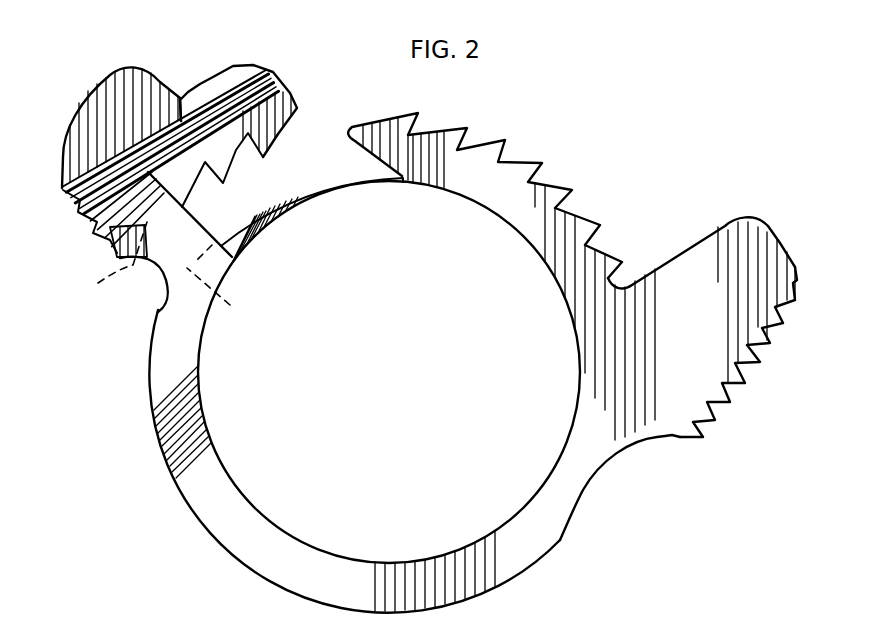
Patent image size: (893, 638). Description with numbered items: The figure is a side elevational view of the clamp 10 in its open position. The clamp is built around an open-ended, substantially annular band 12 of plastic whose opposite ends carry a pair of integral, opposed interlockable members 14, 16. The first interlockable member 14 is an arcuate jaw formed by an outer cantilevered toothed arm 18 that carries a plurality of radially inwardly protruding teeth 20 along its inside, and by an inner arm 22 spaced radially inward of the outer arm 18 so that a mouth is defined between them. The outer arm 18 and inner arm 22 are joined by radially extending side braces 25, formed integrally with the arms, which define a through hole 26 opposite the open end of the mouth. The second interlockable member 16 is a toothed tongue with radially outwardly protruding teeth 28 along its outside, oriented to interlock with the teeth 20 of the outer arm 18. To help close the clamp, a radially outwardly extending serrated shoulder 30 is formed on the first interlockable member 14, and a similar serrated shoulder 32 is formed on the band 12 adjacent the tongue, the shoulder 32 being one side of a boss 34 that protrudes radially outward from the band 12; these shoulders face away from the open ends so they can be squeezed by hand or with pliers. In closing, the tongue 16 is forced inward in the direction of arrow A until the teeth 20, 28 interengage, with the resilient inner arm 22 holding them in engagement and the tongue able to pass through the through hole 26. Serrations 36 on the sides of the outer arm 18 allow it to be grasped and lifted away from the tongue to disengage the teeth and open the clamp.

The clamp 10 is at (163, 450).
The annular band 12 is at (315, 567).
The first interlockable member 14 is at (268, 73).
The second interlockable member 16 is at (576, 212).
The outer cantilevered toothed arm 18 is at (222, 133).
The teeth 20 is at (223, 162).
The inner arm 22 is at (322, 190).
The side braces 25 is at (165, 257).
The through hole 26 is at (161, 280).
The teeth 28 is at (522, 172).
The serrated shoulder 30 is at (72, 207).
The serrated shoulder 32 is at (777, 338).
The boss 34 is at (760, 248).
The serrations 36 is at (180, 98).
The arrow A is at (263, 170).